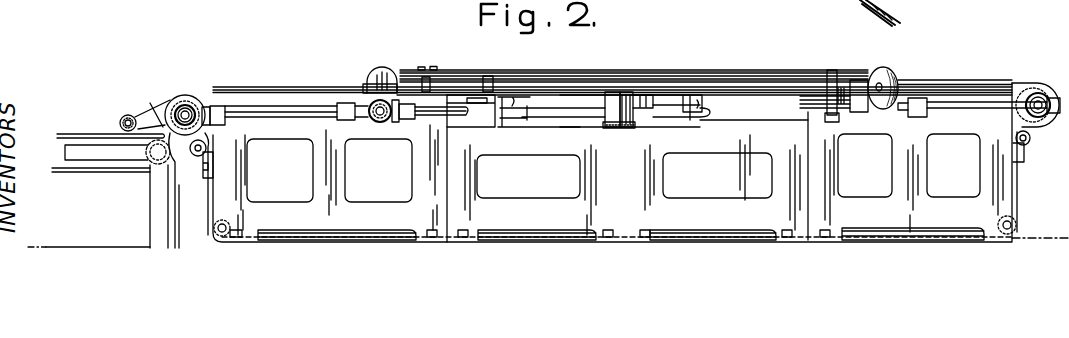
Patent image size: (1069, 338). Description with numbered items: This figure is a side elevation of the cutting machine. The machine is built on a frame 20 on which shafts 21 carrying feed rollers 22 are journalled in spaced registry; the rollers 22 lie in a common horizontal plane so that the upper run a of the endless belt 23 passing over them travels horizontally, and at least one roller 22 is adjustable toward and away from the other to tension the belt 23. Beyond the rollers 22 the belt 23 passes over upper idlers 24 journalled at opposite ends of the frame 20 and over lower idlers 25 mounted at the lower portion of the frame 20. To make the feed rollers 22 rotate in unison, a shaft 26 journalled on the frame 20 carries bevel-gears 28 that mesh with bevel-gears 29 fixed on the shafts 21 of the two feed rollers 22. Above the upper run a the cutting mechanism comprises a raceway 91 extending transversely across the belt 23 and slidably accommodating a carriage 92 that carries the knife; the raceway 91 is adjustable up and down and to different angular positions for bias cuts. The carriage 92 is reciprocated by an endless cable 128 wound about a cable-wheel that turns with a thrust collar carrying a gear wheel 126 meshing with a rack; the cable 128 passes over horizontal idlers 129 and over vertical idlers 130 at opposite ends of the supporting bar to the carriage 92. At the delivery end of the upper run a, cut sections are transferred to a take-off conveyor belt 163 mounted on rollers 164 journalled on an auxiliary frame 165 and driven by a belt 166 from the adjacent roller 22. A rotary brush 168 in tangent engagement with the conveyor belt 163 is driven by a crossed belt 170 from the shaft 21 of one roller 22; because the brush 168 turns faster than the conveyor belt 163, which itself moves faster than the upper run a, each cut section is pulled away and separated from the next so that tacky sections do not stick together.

The frame 20 is at (381, 222).
The shaft 21 is at (187, 110).
The feed roller 22 is at (192, 81).
The endless belt 23 is at (312, 238).
The upper idler 24 is at (198, 158).
The lower idler 25 is at (230, 226).
The shaft 26 is at (258, 109).
The bevel-gear 28 is at (1032, 128).
The bevel-gear 29 is at (1025, 88).
The raceway 91 is at (728, 63).
The carriage 92 is at (434, 71).
The gear wheel 126 is at (628, 127).
The endless cable 128 is at (398, 63).
The horizontal idler 129 is at (508, 126).
The vertical idler 130 is at (370, 85).
The conveyor belt 163 is at (78, 128).
The roller 164 is at (160, 141).
The auxiliary frame 165 is at (150, 228).
The belt 166 is at (188, 180).
The rotary brush 168 is at (124, 118).
The crossed belt 170 is at (152, 105).
The upper run a is at (958, 81).